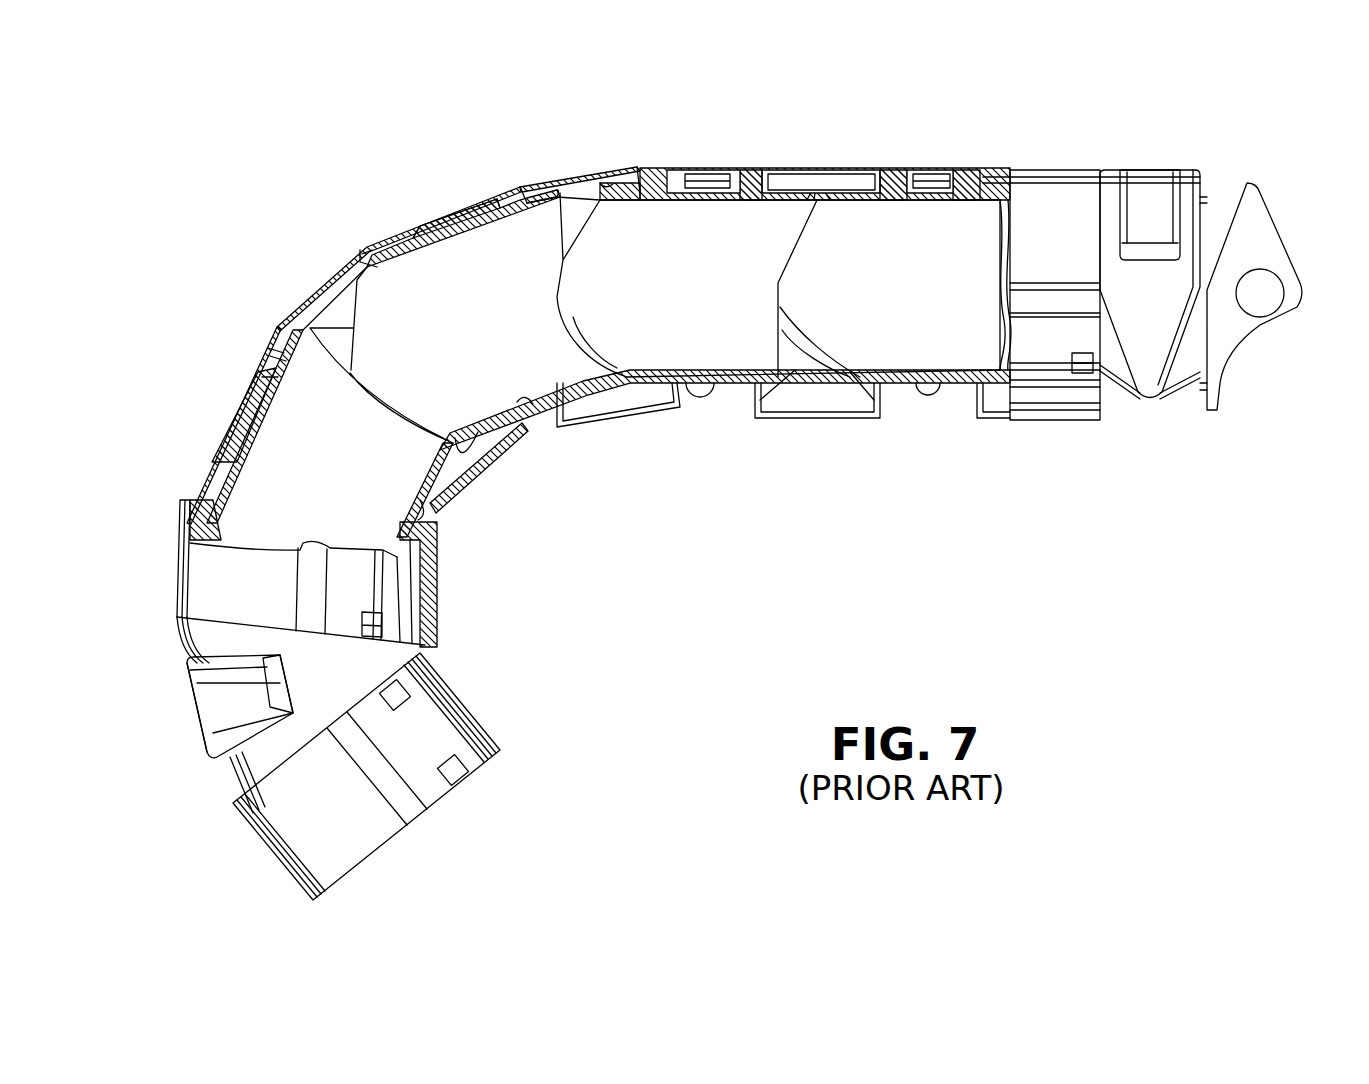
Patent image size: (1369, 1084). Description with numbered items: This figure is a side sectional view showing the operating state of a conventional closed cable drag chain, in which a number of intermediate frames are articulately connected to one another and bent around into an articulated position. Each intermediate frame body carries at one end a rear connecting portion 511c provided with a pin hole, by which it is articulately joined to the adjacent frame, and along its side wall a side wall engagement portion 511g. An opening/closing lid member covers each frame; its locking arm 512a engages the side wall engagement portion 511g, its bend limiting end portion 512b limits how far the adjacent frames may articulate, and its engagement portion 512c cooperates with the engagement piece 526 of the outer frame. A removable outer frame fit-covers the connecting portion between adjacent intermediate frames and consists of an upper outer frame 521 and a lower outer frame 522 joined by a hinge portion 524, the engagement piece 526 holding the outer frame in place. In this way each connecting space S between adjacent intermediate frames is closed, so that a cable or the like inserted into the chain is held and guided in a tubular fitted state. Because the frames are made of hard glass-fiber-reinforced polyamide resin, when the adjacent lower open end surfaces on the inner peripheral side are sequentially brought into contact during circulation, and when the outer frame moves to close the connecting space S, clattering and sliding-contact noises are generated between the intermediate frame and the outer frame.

The rear connecting portion provided with a pin hole 511c is at (1240, 343).
The side wall engagement portion 511g is at (1150, 253).
The locking arm 512a is at (1150, 187).
The bend limiting end portion 512b is at (557, 192).
The engagement portion 512c is at (470, 225).
The upper outer frame 521 is at (597, 200).
The lower outer frame 522 is at (1043, 420).
The hinge portion 524 is at (1083, 377).
The engagement piece 526 is at (473, 230).
The connecting space S is at (577, 195).